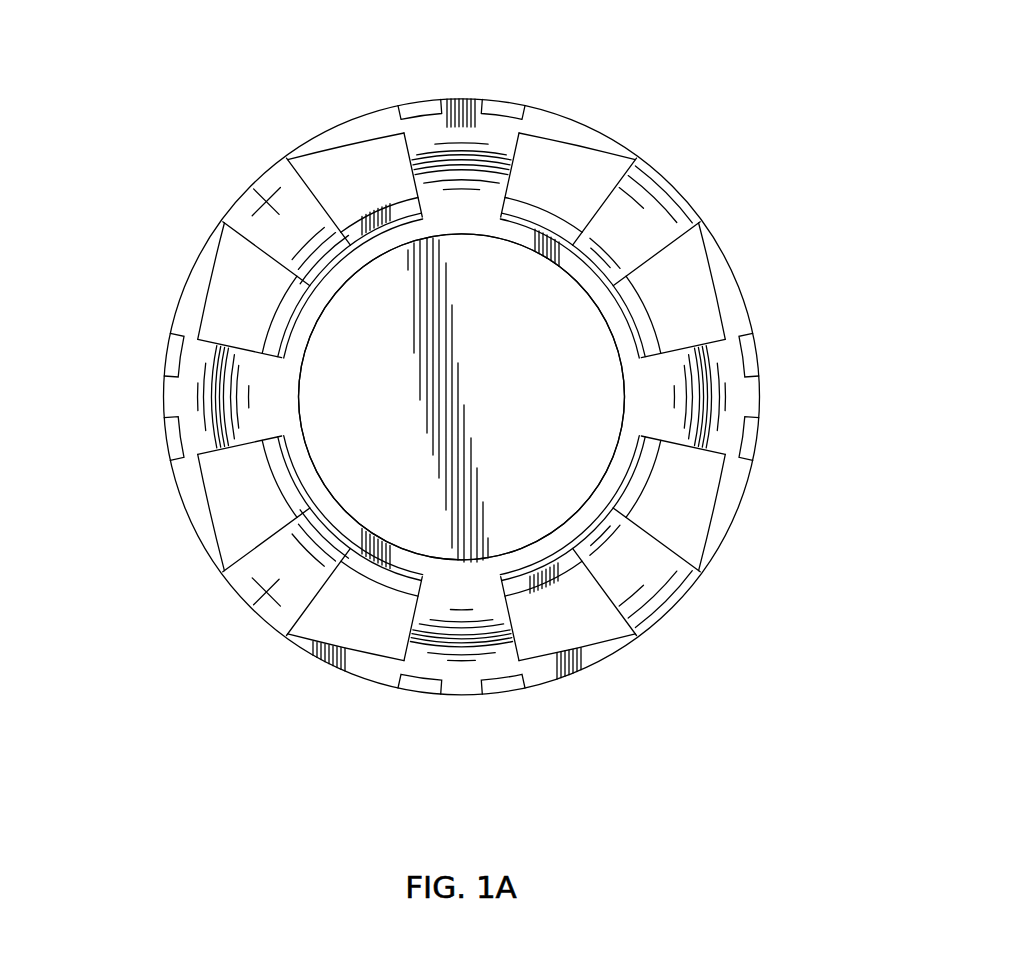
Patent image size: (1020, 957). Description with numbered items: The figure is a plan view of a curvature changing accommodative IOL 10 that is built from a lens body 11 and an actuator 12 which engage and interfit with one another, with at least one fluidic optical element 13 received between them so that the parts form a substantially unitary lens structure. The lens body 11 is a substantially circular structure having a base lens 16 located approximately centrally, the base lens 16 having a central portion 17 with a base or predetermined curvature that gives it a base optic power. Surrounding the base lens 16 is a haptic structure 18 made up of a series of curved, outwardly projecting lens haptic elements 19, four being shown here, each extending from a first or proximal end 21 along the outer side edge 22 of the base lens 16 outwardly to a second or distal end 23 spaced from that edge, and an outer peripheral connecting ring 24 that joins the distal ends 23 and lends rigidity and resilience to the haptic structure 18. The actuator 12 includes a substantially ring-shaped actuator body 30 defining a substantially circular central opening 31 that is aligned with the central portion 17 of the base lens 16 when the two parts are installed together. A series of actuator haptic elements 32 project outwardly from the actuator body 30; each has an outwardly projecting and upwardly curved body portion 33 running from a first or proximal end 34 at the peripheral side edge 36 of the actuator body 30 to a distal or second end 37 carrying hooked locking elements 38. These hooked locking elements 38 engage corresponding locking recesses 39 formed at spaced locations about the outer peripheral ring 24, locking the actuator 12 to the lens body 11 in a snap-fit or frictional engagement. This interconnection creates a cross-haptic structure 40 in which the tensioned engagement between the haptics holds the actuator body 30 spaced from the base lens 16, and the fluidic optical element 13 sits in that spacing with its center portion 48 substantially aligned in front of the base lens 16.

The IOL 10 is at (211, 56).
The lens body 11 is at (156, 508).
The actuator 12 is at (149, 357).
The fluidic optical element 13 is at (514, 400).
The base lens 16 is at (416, 508).
The central portion 17 is at (648, 328).
The haptic structure 18 is at (605, 592).
The lens haptic elements 19 is at (262, 192).
The first or proximal end 21 is at (309, 515).
The outer side edge 22 is at (282, 525).
The second or distal end 23 is at (237, 584).
The outer peripheral connecting ring 24 is at (305, 641).
The actuator body 30 is at (462, 223).
The central opening 31 is at (322, 358).
The actuator haptic elements 32 is at (466, 662).
The body portion 33 is at (487, 153).
The first or proximal end 34 is at (614, 457).
The peripheral side edge 36 is at (410, 228).
The distal or second end 37 is at (748, 418).
The hooked locking elements 38 is at (420, 694).
The locking recesses 39 is at (506, 694).
The cross-haptic structure 40 is at (149, 452).
The center portion 48 is at (475, 291).